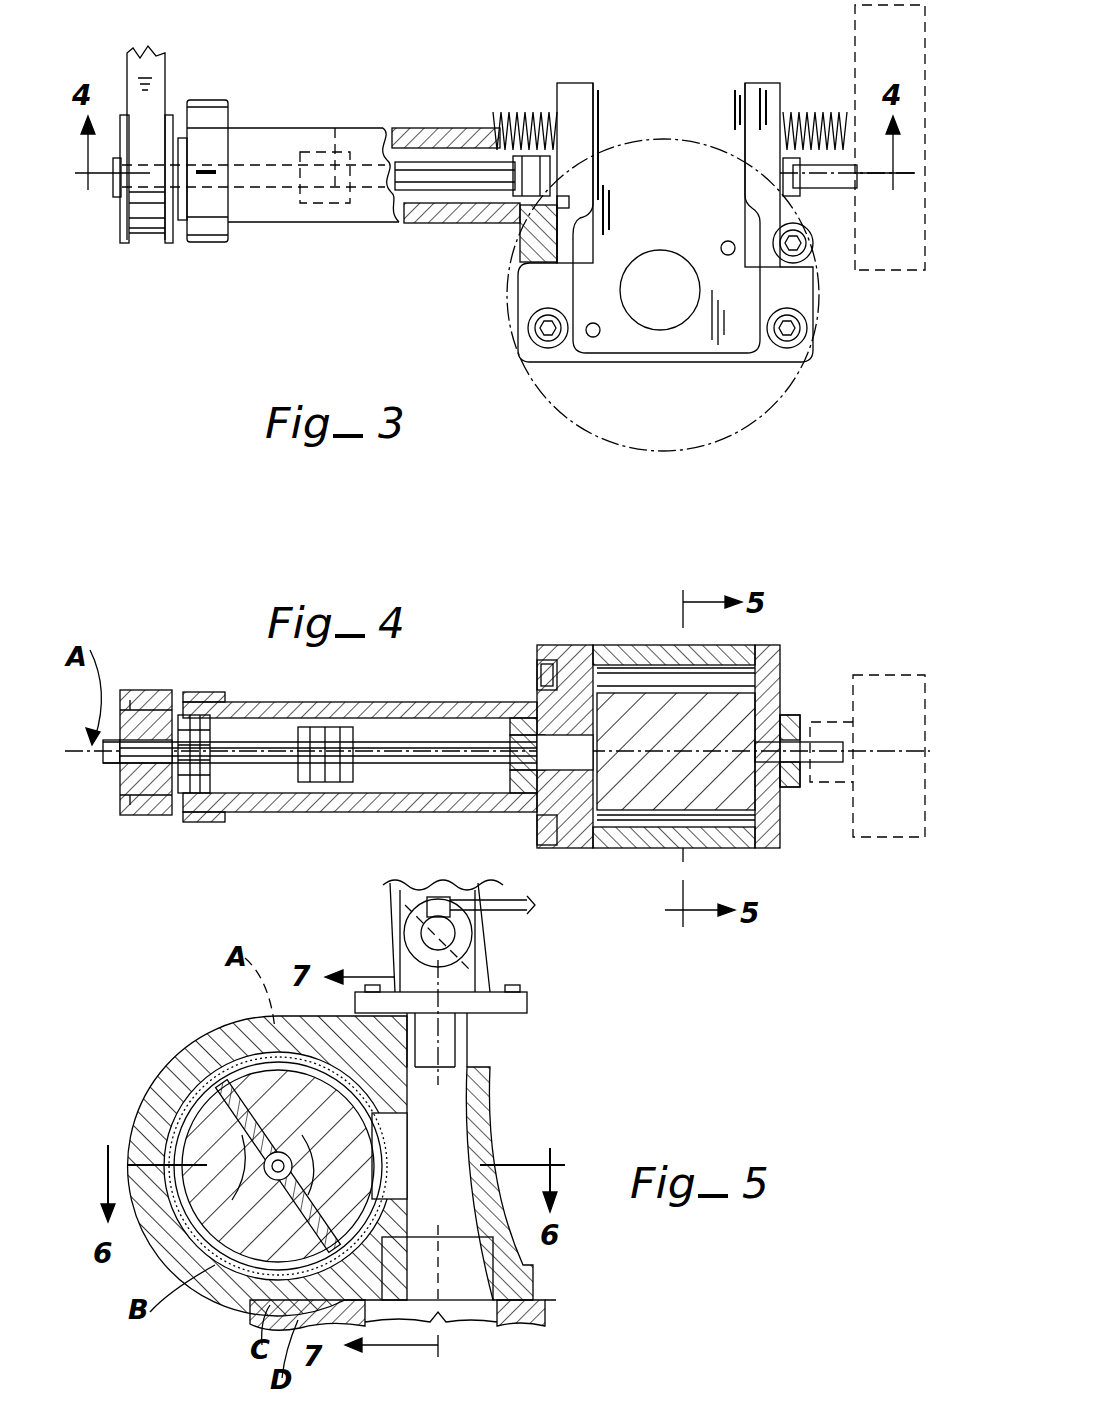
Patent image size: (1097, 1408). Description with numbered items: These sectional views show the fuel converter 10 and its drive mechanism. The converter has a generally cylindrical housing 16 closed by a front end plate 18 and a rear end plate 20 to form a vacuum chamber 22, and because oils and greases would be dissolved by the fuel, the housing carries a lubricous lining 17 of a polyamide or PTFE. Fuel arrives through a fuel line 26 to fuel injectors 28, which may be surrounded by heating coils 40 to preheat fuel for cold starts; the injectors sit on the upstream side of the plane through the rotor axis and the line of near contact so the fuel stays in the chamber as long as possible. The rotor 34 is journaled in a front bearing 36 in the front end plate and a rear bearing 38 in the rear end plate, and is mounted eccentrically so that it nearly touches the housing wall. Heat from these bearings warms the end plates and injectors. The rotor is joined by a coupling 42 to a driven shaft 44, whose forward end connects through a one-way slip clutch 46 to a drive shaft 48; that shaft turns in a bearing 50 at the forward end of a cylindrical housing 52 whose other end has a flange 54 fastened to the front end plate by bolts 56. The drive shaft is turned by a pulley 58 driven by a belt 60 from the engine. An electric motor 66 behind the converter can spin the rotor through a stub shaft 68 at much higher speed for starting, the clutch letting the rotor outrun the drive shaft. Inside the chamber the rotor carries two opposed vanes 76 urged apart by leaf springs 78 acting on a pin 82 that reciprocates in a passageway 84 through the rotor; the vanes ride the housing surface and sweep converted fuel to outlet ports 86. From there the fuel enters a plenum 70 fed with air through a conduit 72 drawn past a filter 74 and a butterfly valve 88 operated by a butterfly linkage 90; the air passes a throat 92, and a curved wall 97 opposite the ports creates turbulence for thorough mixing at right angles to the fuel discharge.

In FIG. 3, the fuel converter 10 is at (622, 60).
In FIG. 4, the fuel converter 10 is at (627, 876).
In FIG. 4, the housing 16 is at (693, 646).
In FIG. 5, the housing 16 is at (180, 1055).
In FIG. 4, the lining 17 is at (642, 645).
In FIG. 5, the lining 17 is at (265, 1015).
In FIG. 3, the front end plate 18 is at (557, 88).
In FIG. 4, the front end plate 18 is at (570, 645).
In FIG. 3, the rear end plate 20 is at (752, 88).
In FIG. 4, the rear end plate 20 is at (782, 655).
In FIG. 4, the vacuum chamber 22 is at (755, 648).
In FIG. 5, the vacuum chamber 22 is at (165, 1225).
In FIG. 3, the fuel line 26 is at (495, 130).
In FIG. 3, the fuel injectors 28 is at (505, 118).
In FIG. 5, the fuel injectors 28 is at (200, 1235).
In FIG. 4, the rotor 34 is at (625, 720).
In FIG. 5, the rotor 34 is at (225, 1040).
In FIG. 4, the front bearing 36 is at (500, 808).
In FIG. 4, the rear bearing 38 is at (795, 787).
In FIG. 3, the heating coils 40 is at (562, 100).
In FIG. 4, the coupling 42 is at (522, 735).
In FIG. 3, the driven shaft 44 is at (487, 178).
In FIG. 4, the driven shaft 44 is at (410, 762).
In FIG. 3, the one-way slip clutch 46 is at (335, 150).
In FIG. 4, the one-way slip clutch 46 is at (318, 782).
In FIG. 3, the drive shaft 48 is at (262, 195).
In FIG. 4, the drive shaft 48 is at (278, 745).
In FIG. 4, the bearing 50 is at (200, 800).
In FIG. 3, the cylindrical housing 52 is at (370, 205).
In FIG. 4, the cylindrical housing 52 is at (425, 705).
In FIG. 3, the flange 54 is at (540, 258).
In FIG. 4, the flange 54 is at (552, 655).
In FIG. 3, the bolts 56 is at (530, 285).
In FIG. 4, the bolts 56 is at (545, 662).
In FIG. 3, the pulley 58 is at (120, 230).
In FIG. 4, the pulley 58 is at (118, 790).
In FIG. 3, the belt 60 is at (200, 242).
In FIG. 4, the belt 60 is at (143, 690).
In FIG. 3, the electric motor 66 is at (925, 270).
In FIG. 4, the electric motor 66 is at (893, 675).
In FIG. 3, the stub shaft 68 is at (830, 190).
In FIG. 4, the stub shaft 68 is at (812, 745).
In FIG. 3, the plenum 70 is at (650, 350).
In FIG. 5, the plenum 70 is at (470, 1100).
In FIG. 5, the conduit 72 is at (480, 965).
In FIG. 3, the filter 74 is at (555, 410).
In FIG. 5, the vanes 76 is at (170, 1080).
In FIG. 5, the leaf springs 78 is at (200, 1110).
In FIG. 5, the pin 82 is at (300, 1060).
In FIG. 5, the passageway 84 is at (245, 1280).
In FIG. 5, the outlet ports 86 is at (437, 1268).
In FIG. 5, the butterfly valve 88 is at (385, 915).
In FIG. 5, the butterfly linkage 90 is at (527, 908).
In FIG. 3, the throat 92 is at (683, 305).
In FIG. 5, the throat 92 is at (470, 1032).
In FIG. 5, the curved wall 97 is at (455, 1140).